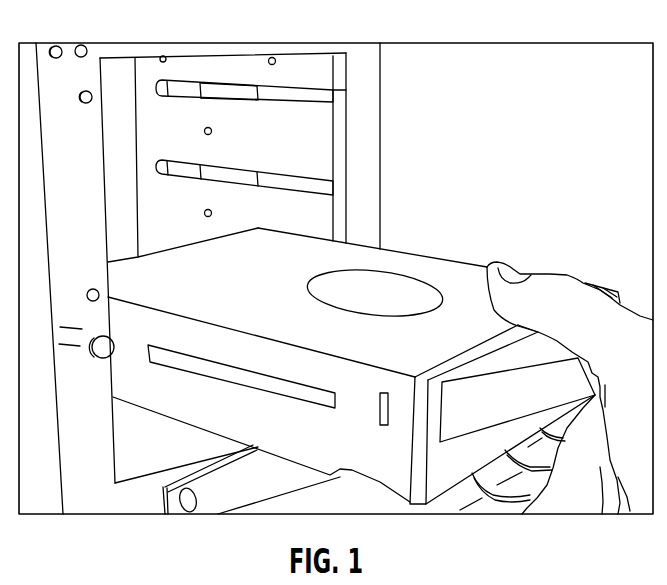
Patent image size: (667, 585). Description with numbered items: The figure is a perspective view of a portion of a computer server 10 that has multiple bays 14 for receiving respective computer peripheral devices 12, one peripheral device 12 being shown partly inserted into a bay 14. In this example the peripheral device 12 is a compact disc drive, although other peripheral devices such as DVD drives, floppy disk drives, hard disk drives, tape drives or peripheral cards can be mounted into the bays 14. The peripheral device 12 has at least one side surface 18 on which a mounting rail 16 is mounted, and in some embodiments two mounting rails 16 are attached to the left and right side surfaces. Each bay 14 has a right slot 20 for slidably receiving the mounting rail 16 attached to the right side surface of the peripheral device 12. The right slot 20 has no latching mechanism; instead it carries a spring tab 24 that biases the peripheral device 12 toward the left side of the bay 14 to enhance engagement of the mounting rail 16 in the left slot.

The computer server 10 is at (475, 128).
The peripheral device 12 is at (425, 255).
The bay 14 is at (302, 127).
The mounting rail 16 is at (222, 370).
The side surface 18 is at (247, 415).
The right slot 20 is at (190, 81).
The spring tab 24 is at (238, 90).